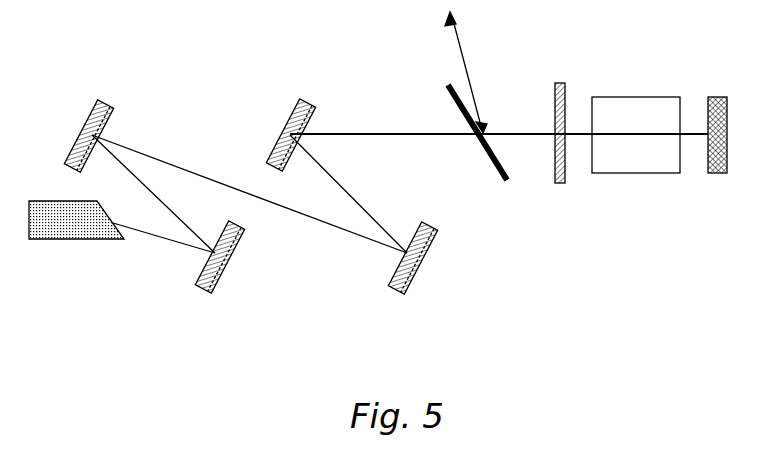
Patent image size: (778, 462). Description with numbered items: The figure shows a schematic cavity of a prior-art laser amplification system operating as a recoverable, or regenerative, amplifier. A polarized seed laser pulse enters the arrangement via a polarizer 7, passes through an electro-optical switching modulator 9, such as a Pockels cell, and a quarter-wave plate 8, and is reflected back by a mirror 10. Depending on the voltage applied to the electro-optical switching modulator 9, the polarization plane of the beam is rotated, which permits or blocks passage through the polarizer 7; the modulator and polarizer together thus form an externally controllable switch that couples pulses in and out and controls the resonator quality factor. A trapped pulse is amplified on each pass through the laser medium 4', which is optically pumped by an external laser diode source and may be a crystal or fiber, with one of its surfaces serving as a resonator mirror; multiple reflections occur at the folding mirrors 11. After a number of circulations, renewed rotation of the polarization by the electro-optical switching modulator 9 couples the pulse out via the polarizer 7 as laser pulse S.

The laser medium 4' is at (79, 238).
The polarizer 7 is at (520, 155).
The quarter-wave plate 8 is at (602, 126).
The electro-optical switching modulator 9 is at (641, 154).
The mirror 10 is at (656, 100).
The folding mirrors 11 is at (274, 205).
The laser pulse S is at (453, 72).